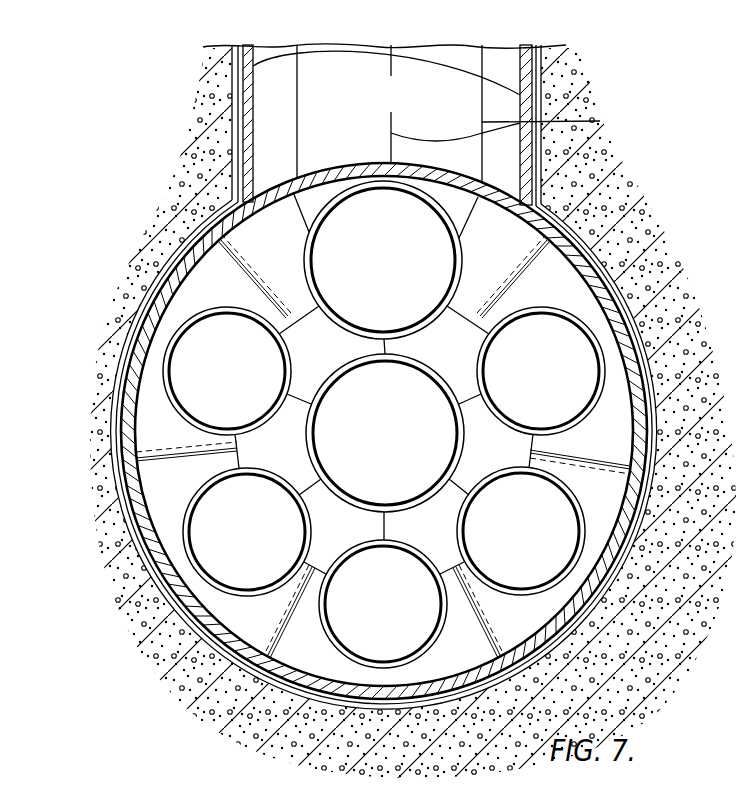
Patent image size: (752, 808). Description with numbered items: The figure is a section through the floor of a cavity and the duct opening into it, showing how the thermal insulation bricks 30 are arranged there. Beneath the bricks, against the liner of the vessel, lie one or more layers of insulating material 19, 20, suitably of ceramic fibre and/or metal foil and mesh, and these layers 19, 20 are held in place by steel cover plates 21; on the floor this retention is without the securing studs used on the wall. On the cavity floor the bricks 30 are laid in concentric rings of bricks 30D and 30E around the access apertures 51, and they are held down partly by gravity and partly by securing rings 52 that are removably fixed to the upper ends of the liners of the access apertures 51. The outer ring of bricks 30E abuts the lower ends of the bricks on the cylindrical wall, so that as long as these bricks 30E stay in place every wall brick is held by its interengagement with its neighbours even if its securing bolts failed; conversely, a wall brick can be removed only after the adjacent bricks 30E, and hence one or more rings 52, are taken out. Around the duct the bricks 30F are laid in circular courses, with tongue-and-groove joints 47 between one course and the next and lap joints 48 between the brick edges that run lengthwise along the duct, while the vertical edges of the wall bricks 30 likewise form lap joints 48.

The layer of insulating material 19 is at (215, 213).
The layer of insulating material 20 is at (384, 454).
The steel cover plate 21 is at (177, 247).
The brick 30 is at (124, 390).
The brick of concentric ring 30D is at (472, 358).
The brick of concentric ring 30E is at (624, 504).
The duct brick 30F is at (412, 111).
The tongue-and-groove joint 47 is at (530, 95).
The lap joint 48 is at (72, 562).
The access aperture 51 is at (392, 451).
The securing ring 52 is at (462, 261).